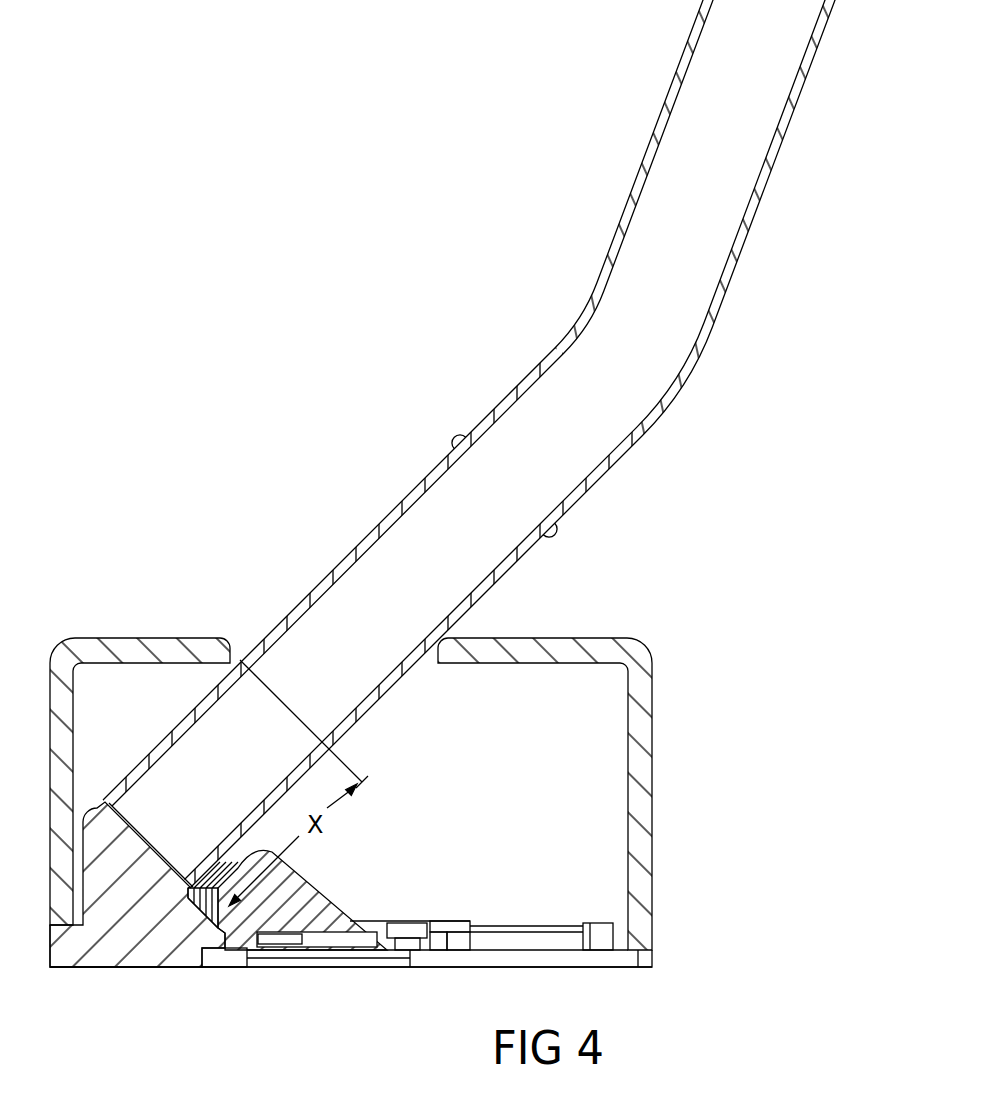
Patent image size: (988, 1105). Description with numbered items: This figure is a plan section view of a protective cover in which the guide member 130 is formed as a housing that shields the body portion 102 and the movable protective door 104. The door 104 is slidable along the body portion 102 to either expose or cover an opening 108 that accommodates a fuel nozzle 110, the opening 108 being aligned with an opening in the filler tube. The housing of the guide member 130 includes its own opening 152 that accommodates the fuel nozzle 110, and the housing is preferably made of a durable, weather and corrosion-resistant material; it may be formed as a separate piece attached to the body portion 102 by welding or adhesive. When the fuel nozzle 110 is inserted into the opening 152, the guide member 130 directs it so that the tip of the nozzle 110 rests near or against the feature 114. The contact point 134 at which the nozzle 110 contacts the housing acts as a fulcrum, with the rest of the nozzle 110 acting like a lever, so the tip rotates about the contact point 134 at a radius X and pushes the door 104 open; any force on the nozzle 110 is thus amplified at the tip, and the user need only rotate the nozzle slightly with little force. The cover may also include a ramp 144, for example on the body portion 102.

The body portion 102 is at (612, 968).
The movable protective door 104 is at (457, 916).
The opening 108 is at (303, 968).
The fuel nozzle 110 is at (598, 277).
The feature 114 is at (303, 886).
The guide member 130 is at (408, 772).
The contact point 134 is at (240, 630).
The ramp 144 is at (150, 862).
The opening 152 is at (438, 665).